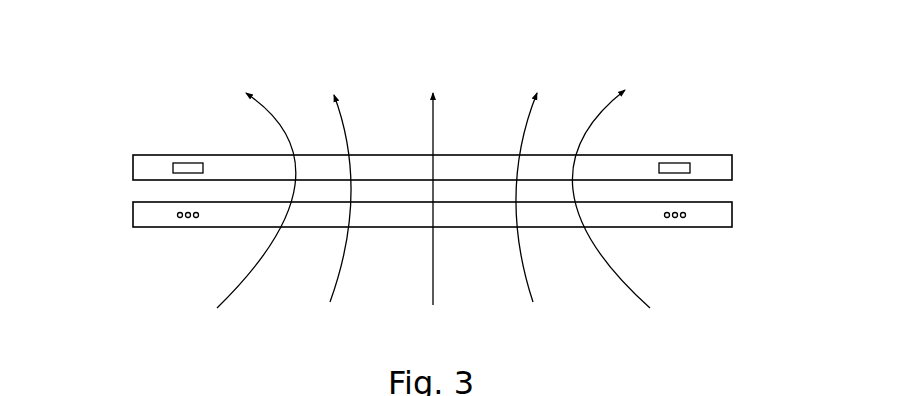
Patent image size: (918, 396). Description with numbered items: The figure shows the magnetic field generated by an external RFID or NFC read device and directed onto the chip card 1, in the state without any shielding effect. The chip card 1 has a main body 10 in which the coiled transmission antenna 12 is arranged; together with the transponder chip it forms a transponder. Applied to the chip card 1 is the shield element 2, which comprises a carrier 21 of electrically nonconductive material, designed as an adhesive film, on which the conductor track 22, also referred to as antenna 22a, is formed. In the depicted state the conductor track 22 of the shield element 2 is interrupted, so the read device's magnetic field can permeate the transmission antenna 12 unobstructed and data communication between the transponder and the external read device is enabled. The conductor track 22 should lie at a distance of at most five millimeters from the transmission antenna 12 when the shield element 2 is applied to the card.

The chip card 1 is at (452, 214).
The shield element 2 is at (213, 107).
The main body 10 is at (476, 249).
The transmission antenna 12 is at (196, 218).
The carrier 21 is at (450, 129).
The conductor track 22 is at (182, 168).
The antenna 22a is at (672, 172).